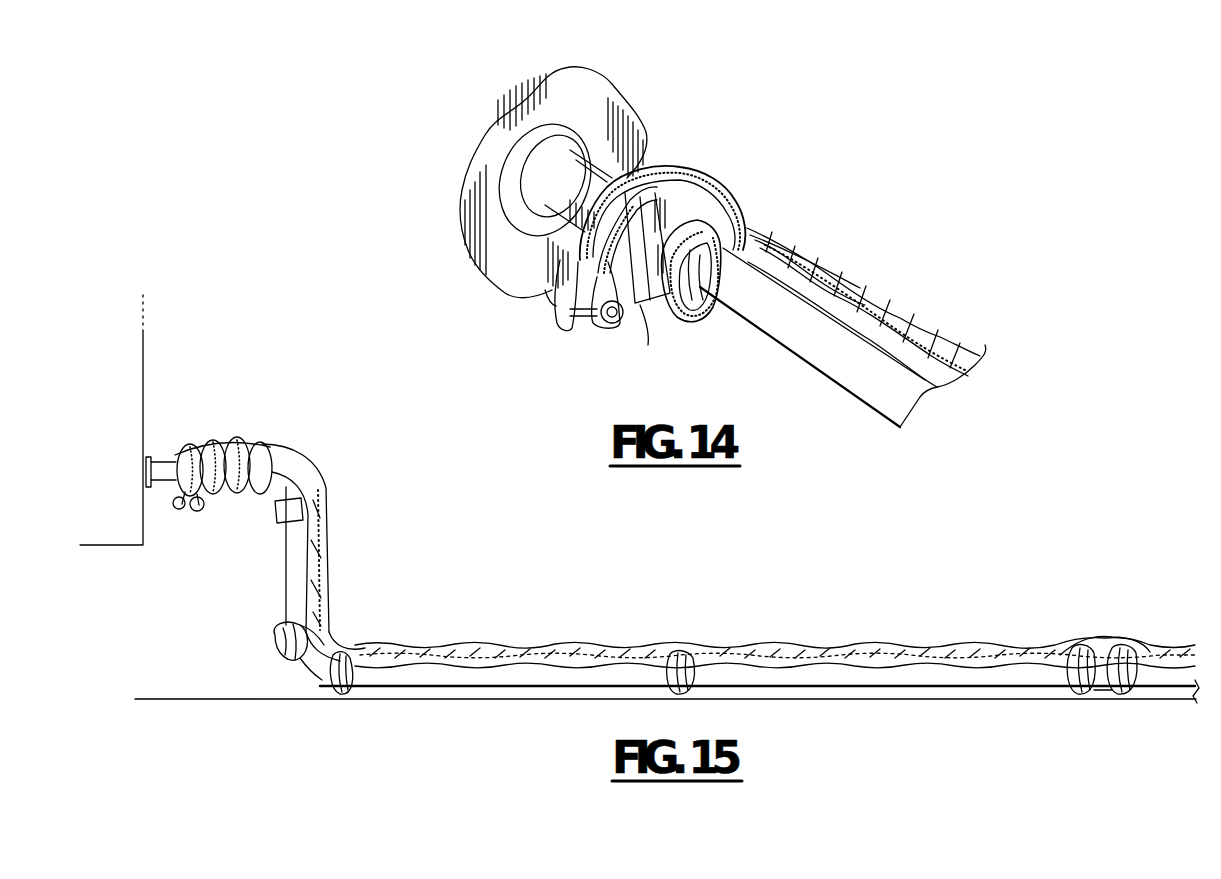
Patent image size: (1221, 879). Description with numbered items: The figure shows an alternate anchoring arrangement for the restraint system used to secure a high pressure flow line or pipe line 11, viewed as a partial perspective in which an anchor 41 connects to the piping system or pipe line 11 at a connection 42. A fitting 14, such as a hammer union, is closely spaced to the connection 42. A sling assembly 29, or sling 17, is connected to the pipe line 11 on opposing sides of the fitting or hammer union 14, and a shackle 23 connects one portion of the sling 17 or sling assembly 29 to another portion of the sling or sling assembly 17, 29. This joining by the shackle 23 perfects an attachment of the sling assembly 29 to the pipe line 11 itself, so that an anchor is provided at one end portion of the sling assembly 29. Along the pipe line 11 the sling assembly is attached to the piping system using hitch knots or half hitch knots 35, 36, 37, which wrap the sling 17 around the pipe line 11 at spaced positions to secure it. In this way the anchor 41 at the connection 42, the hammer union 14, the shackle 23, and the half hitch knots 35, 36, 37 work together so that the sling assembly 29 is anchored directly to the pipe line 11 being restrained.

In FIG. 14, the pipe line 11 is at (878, 390).
In FIG. 15, the pipe line 11 is at (490, 683).
In FIG. 14, the fitting 14 is at (656, 318).
In FIG. 15, the fitting 14 is at (215, 490).
In FIG. 14, the sling 17 is at (840, 285).
In FIG. 14, the shackle 23 is at (557, 303).
In FIG. 14, the sling assembly 29 is at (811, 179).
In FIG. 15, the sling assembly 29 is at (350, 648).
In FIG. 15, the half hitch knot 35 is at (278, 656).
In FIG. 15, the half hitch knot 36 is at (687, 653).
In FIG. 15, the half hitch knot 37 is at (1090, 645).
In FIG. 14, the anchor 41 is at (500, 110).
In FIG. 15, the anchor 41 is at (147, 400).
In FIG. 14, the connection 42 is at (590, 150).
In FIG. 15, the connection 42 is at (150, 458).